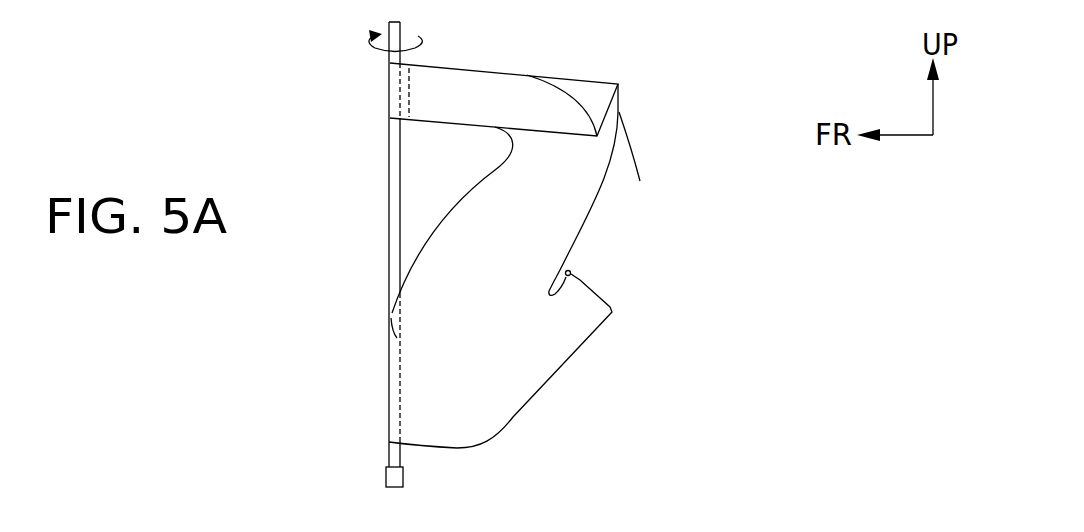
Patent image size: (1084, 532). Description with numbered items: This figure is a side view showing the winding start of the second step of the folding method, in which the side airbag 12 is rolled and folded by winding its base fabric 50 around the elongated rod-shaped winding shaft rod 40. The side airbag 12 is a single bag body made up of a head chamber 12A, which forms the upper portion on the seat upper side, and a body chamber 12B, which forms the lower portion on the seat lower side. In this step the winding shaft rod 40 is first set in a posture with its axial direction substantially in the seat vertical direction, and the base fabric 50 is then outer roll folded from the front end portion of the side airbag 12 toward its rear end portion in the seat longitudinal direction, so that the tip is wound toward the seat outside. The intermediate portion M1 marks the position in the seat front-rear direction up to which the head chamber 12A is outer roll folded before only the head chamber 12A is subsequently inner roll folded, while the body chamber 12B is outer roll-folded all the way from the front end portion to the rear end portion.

The side airbag 12 is at (541, 227).
The head chamber 12A is at (467, 86).
The body chamber 12B is at (495, 392).
The winding shaft rod 40 is at (388, 155).
The base fabric 50 is at (580, 193).
The intermediate portion M1 is at (440, 88).